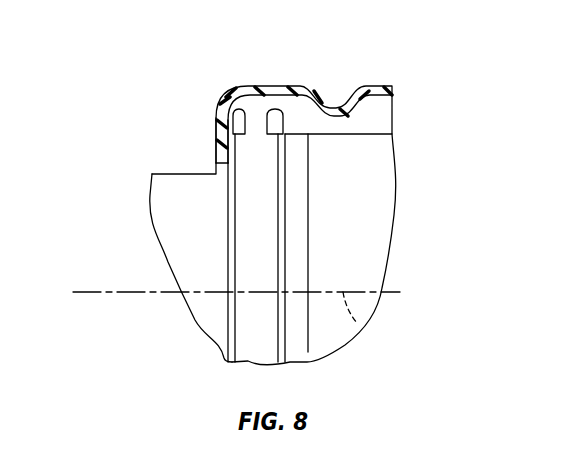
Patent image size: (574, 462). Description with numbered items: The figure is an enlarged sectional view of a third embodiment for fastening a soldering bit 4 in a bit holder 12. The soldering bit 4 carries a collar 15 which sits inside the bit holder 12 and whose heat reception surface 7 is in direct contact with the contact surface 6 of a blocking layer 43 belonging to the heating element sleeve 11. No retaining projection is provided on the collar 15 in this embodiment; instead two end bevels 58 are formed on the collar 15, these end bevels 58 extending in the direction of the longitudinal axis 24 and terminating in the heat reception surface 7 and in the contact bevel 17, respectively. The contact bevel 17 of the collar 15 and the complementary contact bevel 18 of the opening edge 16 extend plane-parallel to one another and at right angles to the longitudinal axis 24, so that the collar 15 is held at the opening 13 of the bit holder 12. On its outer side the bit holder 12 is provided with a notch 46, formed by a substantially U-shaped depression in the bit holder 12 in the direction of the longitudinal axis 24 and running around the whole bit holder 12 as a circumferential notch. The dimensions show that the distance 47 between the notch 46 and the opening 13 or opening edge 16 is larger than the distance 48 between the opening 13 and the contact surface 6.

The soldering bit 4 is at (156, 255).
The contact surface 6 is at (273, 128).
The heat reception surface 7 is at (290, 218).
The heating element sleeve 11 is at (376, 263).
The bit holder 12 is at (391, 100).
The opening 13 is at (218, 170).
The collar 15 is at (270, 251).
The opening edge 16 is at (222, 138).
The contact bevel 17 is at (228, 283).
The complementary contact bevel 18 is at (244, 128).
The longitudinal axis 24 is at (359, 328).
The blocking layer 43 is at (296, 247).
The notch 46 is at (345, 94).
The distance between notch and opening 47 is at (337, 198).
The distance between opening and contact surface 48 is at (285, 331).
The end bevels 58 is at (219, 299).